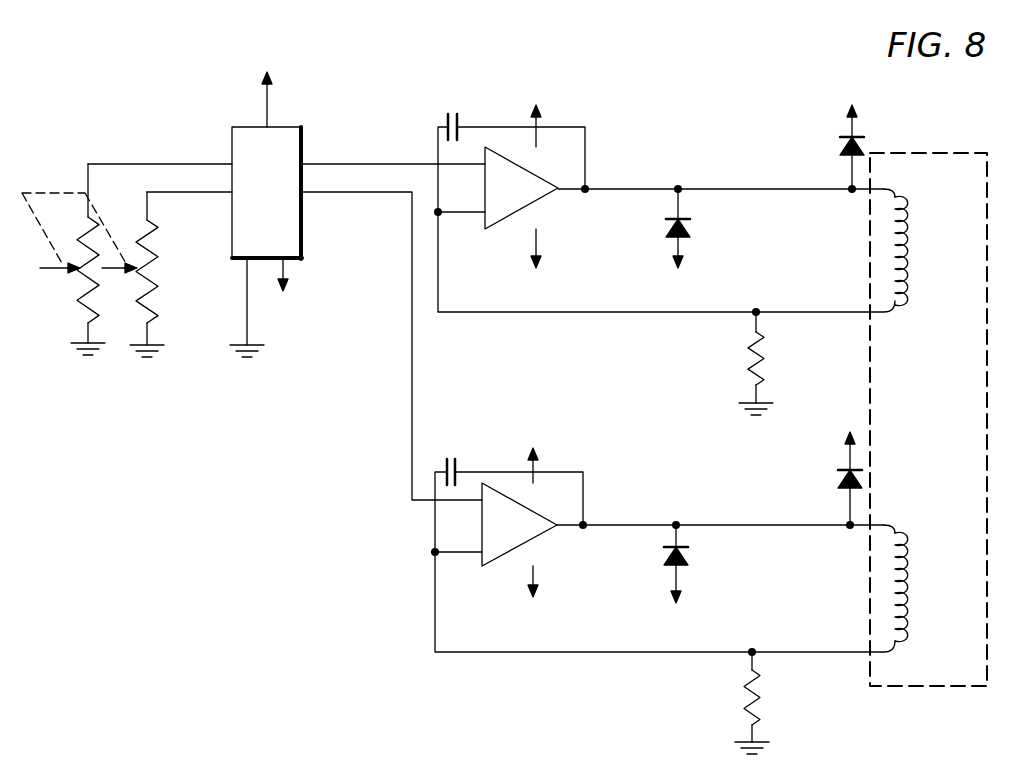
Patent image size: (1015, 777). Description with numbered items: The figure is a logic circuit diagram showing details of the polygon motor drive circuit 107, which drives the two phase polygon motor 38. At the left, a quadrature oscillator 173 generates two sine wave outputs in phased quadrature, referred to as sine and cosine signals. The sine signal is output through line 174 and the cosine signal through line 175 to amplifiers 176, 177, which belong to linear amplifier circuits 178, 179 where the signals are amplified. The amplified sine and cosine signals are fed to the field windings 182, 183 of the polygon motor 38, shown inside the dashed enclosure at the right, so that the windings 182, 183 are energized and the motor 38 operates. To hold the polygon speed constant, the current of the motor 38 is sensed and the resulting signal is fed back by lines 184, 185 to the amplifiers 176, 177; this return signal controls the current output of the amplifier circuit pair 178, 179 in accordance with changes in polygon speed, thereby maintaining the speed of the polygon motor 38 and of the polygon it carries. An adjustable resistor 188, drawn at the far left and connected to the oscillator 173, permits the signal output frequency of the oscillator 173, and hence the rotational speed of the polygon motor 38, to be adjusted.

The two phase polygon motor 38 is at (940, 153).
The polygon motor drive circuit 107 is at (374, 103).
The quadrature oscillator 173 is at (240, 127).
The line 174 is at (412, 278).
The line 175 is at (375, 164).
The amplifier 176 is at (492, 561).
The amplifier 177 is at (505, 218).
The linear amplifier circuit 178 is at (653, 453).
The linear amplifier circuit 179 is at (583, 108).
The field winding 182 is at (904, 582).
The field winding 183 is at (905, 258).
The line 184 is at (568, 652).
The line 185 is at (497, 312).
The adjustable resistor 188 is at (72, 302).